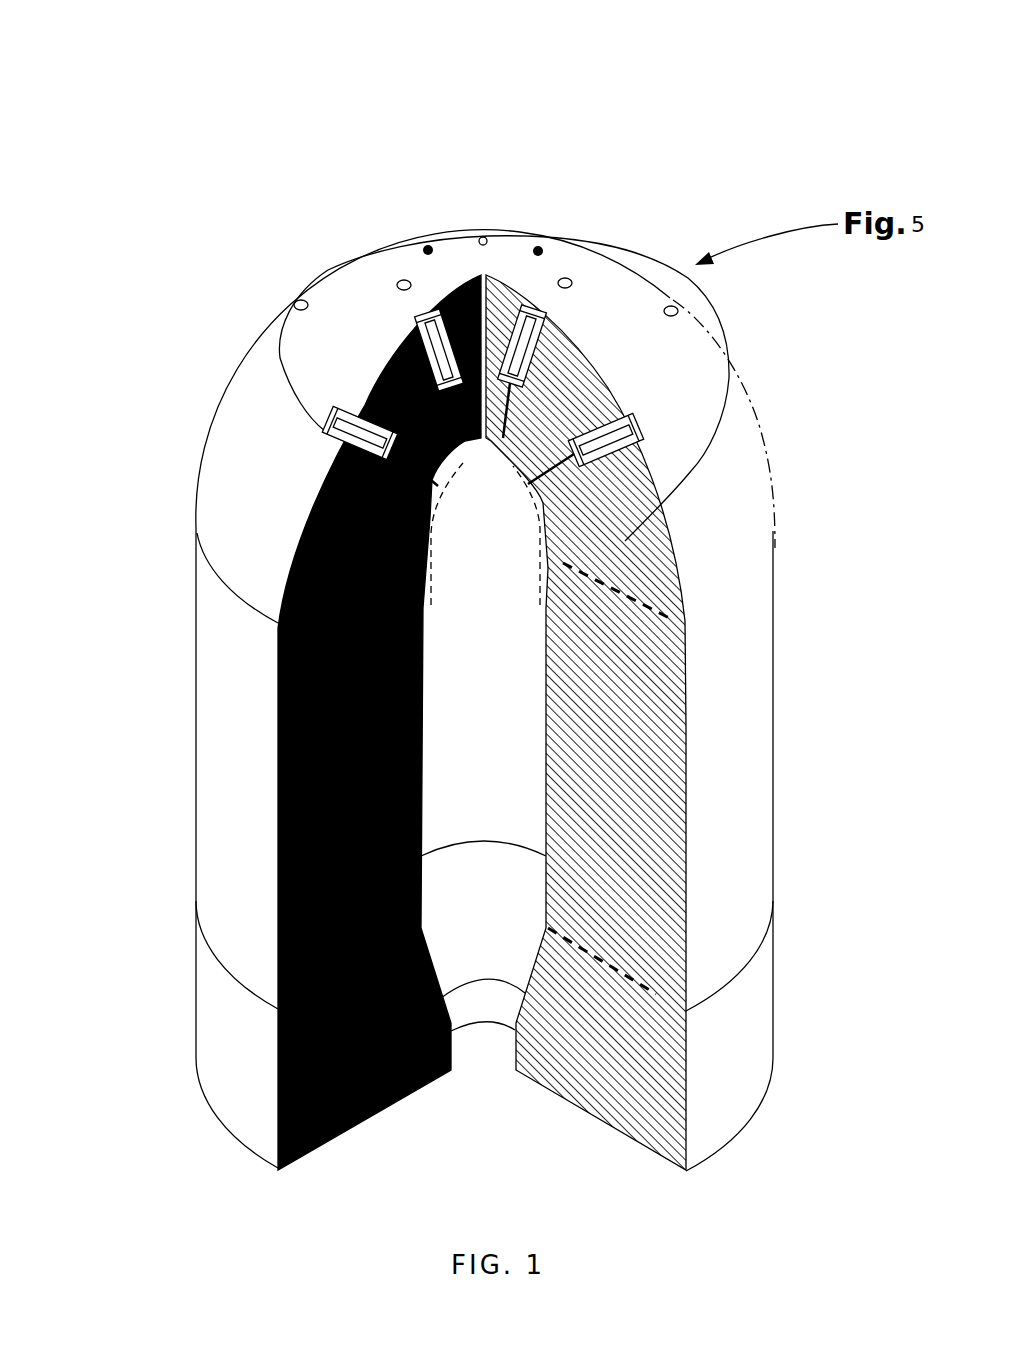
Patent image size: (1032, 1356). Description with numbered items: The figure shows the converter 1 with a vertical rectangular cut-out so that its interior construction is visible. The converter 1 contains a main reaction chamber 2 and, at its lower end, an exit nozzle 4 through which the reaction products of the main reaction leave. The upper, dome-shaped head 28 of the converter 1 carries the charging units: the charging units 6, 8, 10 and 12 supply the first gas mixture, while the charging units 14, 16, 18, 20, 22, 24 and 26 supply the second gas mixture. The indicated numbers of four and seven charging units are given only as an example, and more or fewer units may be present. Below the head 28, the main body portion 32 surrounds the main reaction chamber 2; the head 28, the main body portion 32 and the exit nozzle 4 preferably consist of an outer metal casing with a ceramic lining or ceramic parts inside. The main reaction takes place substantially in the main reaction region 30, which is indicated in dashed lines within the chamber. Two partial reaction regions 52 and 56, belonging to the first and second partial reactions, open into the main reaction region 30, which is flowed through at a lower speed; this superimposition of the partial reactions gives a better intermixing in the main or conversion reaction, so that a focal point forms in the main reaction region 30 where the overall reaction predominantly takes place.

The converter 1 is at (775, 862).
The main reaction chamber 2 is at (483, 774).
The exit nozzle 4 is at (474, 1041).
The charging unit 6 is at (600, 427).
The charging unit 8 is at (668, 303).
The charging unit 10 is at (288, 297).
The charging unit 12 is at (322, 420).
The charging unit 14 is at (562, 276).
The charging unit 16 is at (547, 310).
The charging unit 18 is at (545, 298).
The charging unit 20 is at (475, 230).
The charging unit 22 is at (420, 242).
The charging unit 24 is at (396, 275).
The charging unit 26 is at (410, 322).
The head 28 is at (712, 541).
The main reaction region 30 is at (474, 546).
The main body portion 32 is at (620, 906).
The partial reaction region 52 is at (515, 468).
The partial reaction region 56 is at (518, 295).